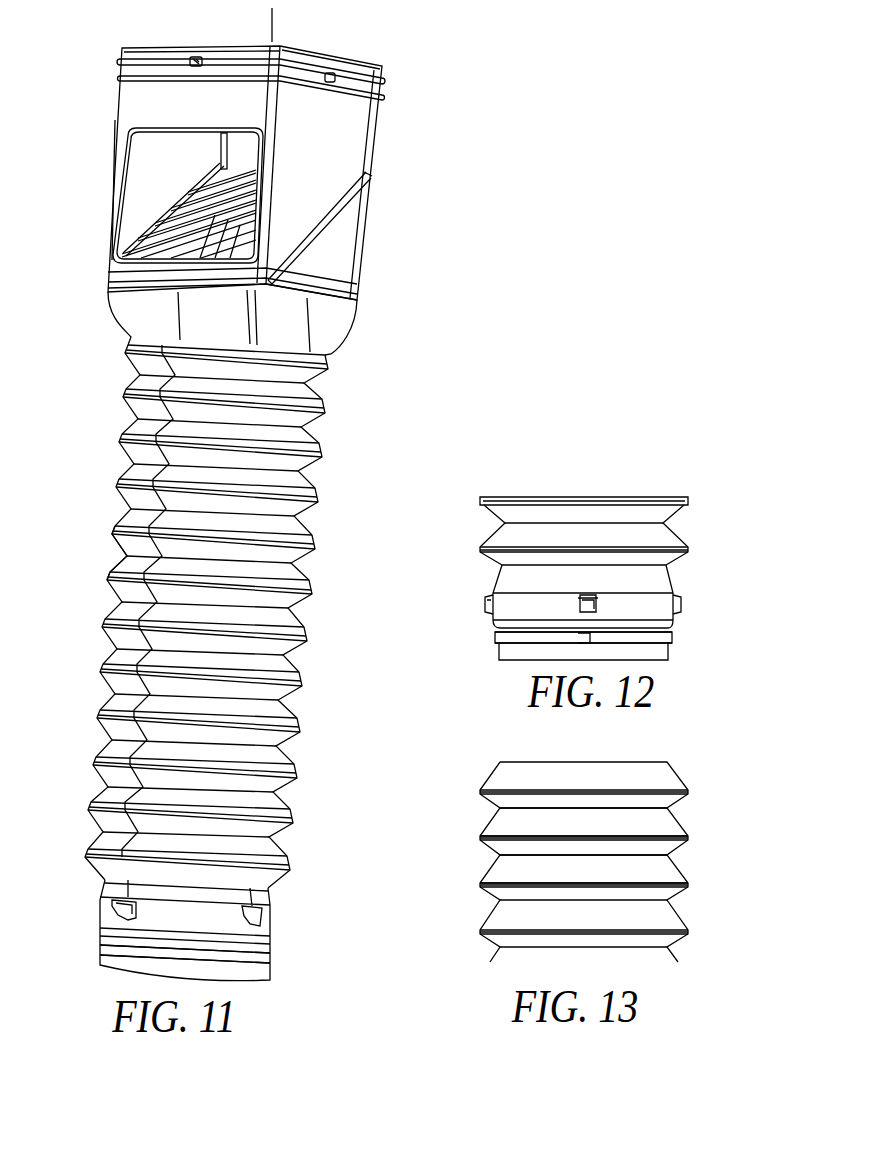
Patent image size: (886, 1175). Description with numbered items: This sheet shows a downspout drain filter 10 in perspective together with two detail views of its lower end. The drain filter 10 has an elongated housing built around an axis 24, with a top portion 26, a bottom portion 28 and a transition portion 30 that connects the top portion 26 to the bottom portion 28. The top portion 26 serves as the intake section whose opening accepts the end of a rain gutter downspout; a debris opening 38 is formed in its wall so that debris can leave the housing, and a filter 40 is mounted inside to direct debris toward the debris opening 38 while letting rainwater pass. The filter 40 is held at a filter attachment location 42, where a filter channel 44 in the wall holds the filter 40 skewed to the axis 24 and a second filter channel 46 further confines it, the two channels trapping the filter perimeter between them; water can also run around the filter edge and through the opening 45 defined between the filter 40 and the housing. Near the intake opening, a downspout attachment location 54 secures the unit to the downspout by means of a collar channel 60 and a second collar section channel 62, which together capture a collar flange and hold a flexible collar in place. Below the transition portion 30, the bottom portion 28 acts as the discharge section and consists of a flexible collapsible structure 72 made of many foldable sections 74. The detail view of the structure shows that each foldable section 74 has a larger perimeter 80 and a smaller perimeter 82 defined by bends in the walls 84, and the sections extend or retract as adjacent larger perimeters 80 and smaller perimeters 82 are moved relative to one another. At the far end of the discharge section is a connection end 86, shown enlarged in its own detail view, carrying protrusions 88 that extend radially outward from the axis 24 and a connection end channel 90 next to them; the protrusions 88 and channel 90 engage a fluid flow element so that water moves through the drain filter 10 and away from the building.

In FIG. 11, the downspout drain filter 10 is at (58, 955).
In FIG. 11, the axis 24 is at (273, 33).
In FIG. 11, the top portion 26 is at (99, 102).
In FIG. 11, the bottom portion 28 is at (308, 848).
In FIG. 11, the transition portion 30 is at (97, 318).
In FIG. 11, the debris opening 38 is at (135, 190).
In FIG. 11, the filter 40 is at (192, 192).
In FIG. 11, the filter attachment location 42 is at (393, 183).
In FIG. 11, the filter channel 44 is at (370, 172).
In FIG. 11, the opening 45 is at (372, 181).
In FIG. 11, the second filter channel 46 is at (370, 186).
In FIG. 11, the downspout attachment location 54 is at (391, 88).
In FIG. 11, the collar channel 60 is at (392, 73).
In FIG. 11, the second collar section channel 62 is at (382, 97).
In FIG. 11, the flexible collapsible structure 72 is at (103, 387).
In FIG. 11, the foldable section 74 is at (108, 500).
In FIG. 13, the foldable section 74 is at (445, 760).
In FIG. 13, the larger perimeter 80 is at (440, 838).
In FIG. 13, the smaller perimeter 82 is at (460, 808).
In FIG. 12, the wall 84 is at (673, 535).
In FIG. 13, the wall 84 is at (668, 764).
In FIG. 11, the connection end 86 is at (88, 892).
In FIG. 12, the connection end 86 is at (467, 620).
In FIG. 11, the protrusion 88 is at (118, 907).
In FIG. 12, the protrusion 88 is at (488, 596).
In FIG. 11, the connection end channel 90 is at (268, 954).
In FIG. 12, the connection end channel 90 is at (673, 626).